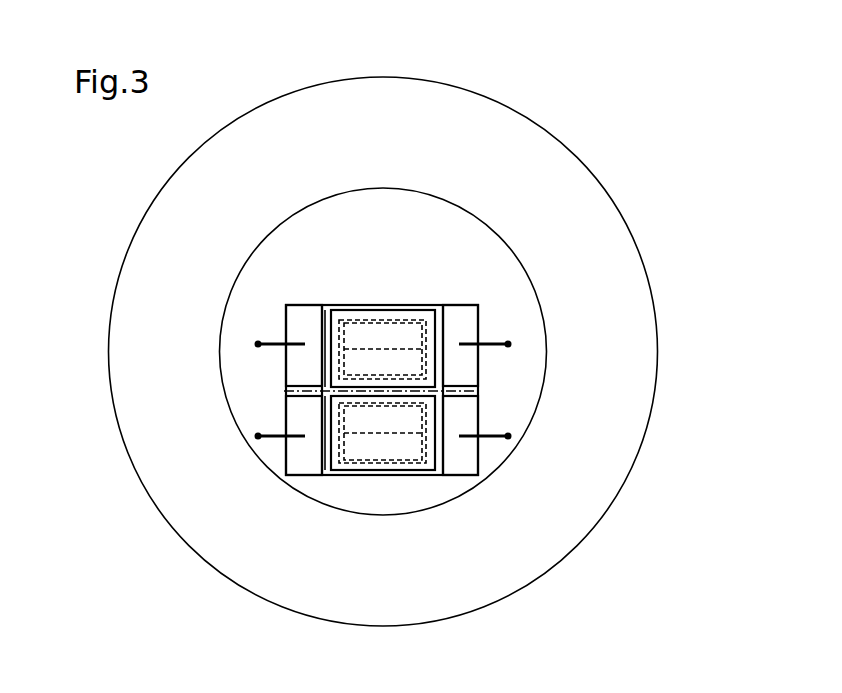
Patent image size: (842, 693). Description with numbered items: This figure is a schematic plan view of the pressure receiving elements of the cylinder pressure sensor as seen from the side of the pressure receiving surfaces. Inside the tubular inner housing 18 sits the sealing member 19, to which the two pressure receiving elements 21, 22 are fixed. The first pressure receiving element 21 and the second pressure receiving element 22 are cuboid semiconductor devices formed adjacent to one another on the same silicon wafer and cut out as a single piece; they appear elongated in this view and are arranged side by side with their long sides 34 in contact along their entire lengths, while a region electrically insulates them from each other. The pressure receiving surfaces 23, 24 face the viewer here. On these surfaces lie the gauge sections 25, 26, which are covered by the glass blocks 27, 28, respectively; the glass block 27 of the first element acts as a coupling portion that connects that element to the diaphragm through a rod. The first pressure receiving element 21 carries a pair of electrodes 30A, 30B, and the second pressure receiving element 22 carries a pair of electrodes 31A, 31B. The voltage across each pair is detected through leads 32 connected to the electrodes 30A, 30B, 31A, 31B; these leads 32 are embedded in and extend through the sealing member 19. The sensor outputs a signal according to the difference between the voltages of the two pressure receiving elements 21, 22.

The inner housing 18 is at (478, 101).
The sealing member 19 is at (417, 200).
The first pressure receiving element 21 is at (360, 310).
The second pressure receiving element 22 is at (357, 475).
The pressure receiving surface 23 is at (324, 312).
The pressure receiving surface 24 is at (325, 480).
The gauge section 25 is at (405, 320).
The gauge section 26 is at (410, 470).
The glass block 27 is at (437, 325).
The glass block 28 is at (449, 478).
The electrode 30A is at (466, 314).
The electrode 30B is at (293, 312).
The electrode 31A is at (472, 462).
The electrode 31B is at (293, 462).
The leads 32 is at (270, 347).
The long sides 34 is at (462, 376).